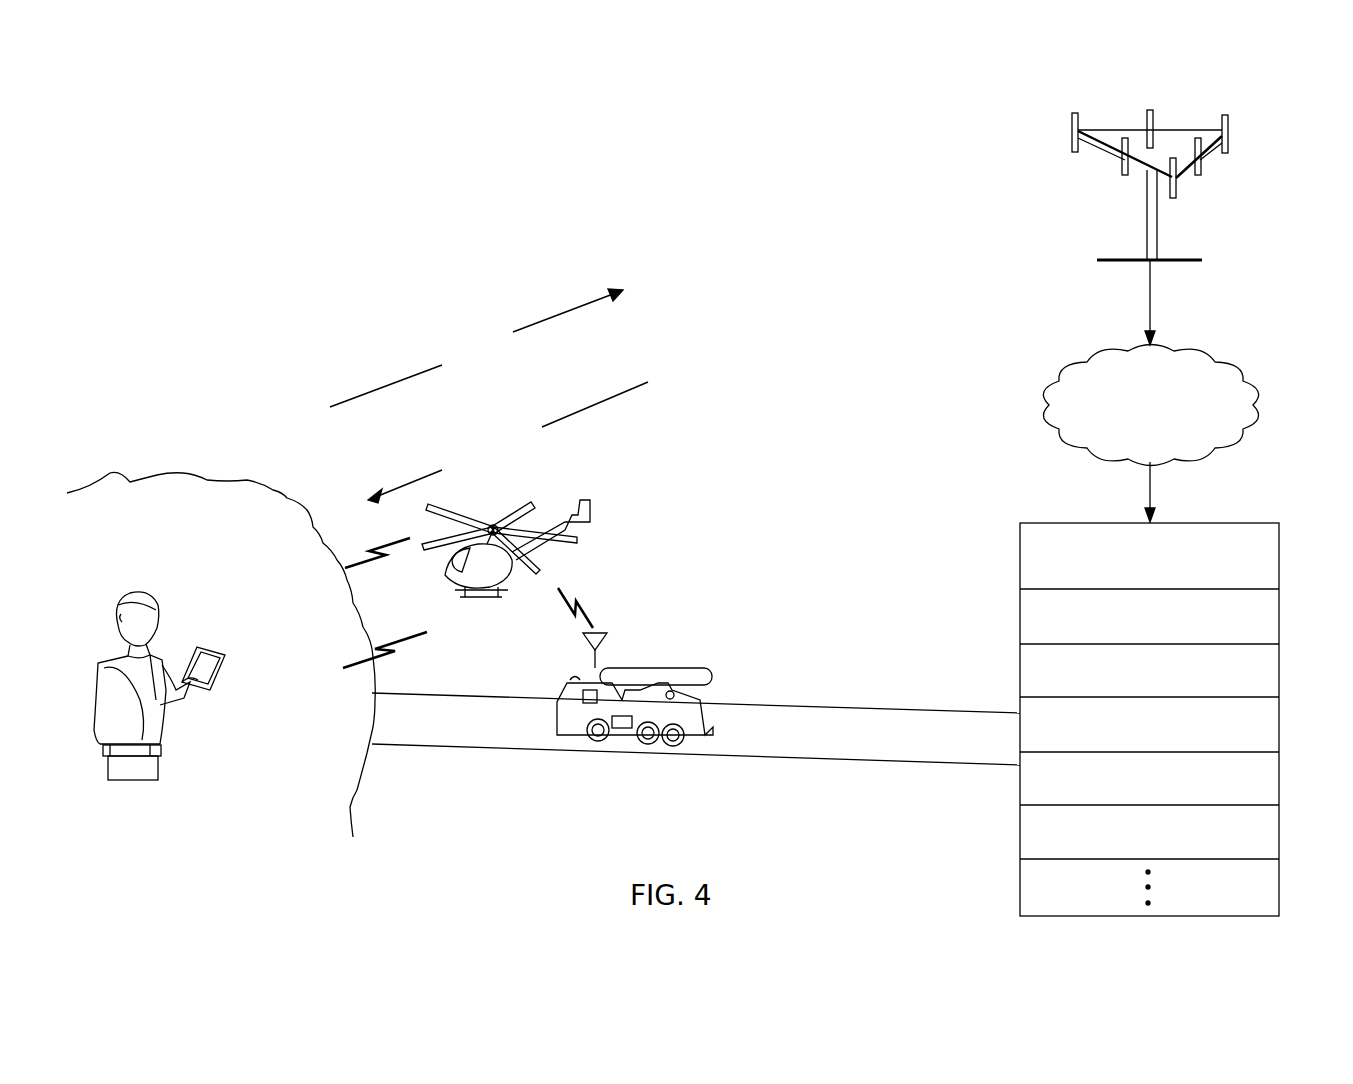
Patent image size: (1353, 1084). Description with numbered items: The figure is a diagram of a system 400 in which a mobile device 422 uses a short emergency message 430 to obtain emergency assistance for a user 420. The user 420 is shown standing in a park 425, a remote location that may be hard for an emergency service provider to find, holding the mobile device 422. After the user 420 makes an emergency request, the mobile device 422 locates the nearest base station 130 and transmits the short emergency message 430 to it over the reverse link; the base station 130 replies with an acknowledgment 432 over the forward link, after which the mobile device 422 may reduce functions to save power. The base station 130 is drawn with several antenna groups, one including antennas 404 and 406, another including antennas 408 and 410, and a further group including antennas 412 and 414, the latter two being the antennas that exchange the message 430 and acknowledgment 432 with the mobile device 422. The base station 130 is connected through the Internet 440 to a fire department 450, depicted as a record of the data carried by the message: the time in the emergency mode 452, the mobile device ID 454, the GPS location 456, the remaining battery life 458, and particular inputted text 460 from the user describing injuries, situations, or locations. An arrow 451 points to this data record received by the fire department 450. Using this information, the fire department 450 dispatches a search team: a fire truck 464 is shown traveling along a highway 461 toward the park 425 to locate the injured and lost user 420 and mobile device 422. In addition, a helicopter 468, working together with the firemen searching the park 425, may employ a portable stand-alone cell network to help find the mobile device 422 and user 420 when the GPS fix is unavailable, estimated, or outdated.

The system 400 is at (271, 220).
The base station 130 is at (1118, 262).
The antenna 404 is at (1174, 200).
The antenna 406 is at (1199, 177).
The antenna 408 is at (1226, 114).
The antenna 410 is at (1151, 109).
The antenna 412 is at (1076, 112).
The antenna 414 is at (1124, 177).
The user 420 is at (137, 590).
The mobile device 422 is at (210, 650).
The park 425 is at (180, 475).
The short emergency message 430 is at (553, 317).
The acknowledgment 432 is at (563, 417).
The Internet 440 is at (1216, 356).
The fire department 450 is at (1245, 522).
The message record 451 is at (956, 871).
The time in the emergency mode 452 is at (1280, 619).
The mobile device ID 454 is at (1280, 665).
The GPS location 456 is at (1280, 722).
The remaining battery life 458 is at (1280, 775).
The inputted text 460 is at (1280, 830).
The highway 461 is at (867, 707).
The fire truck 464 is at (622, 733).
The helicopter 468 is at (575, 505).